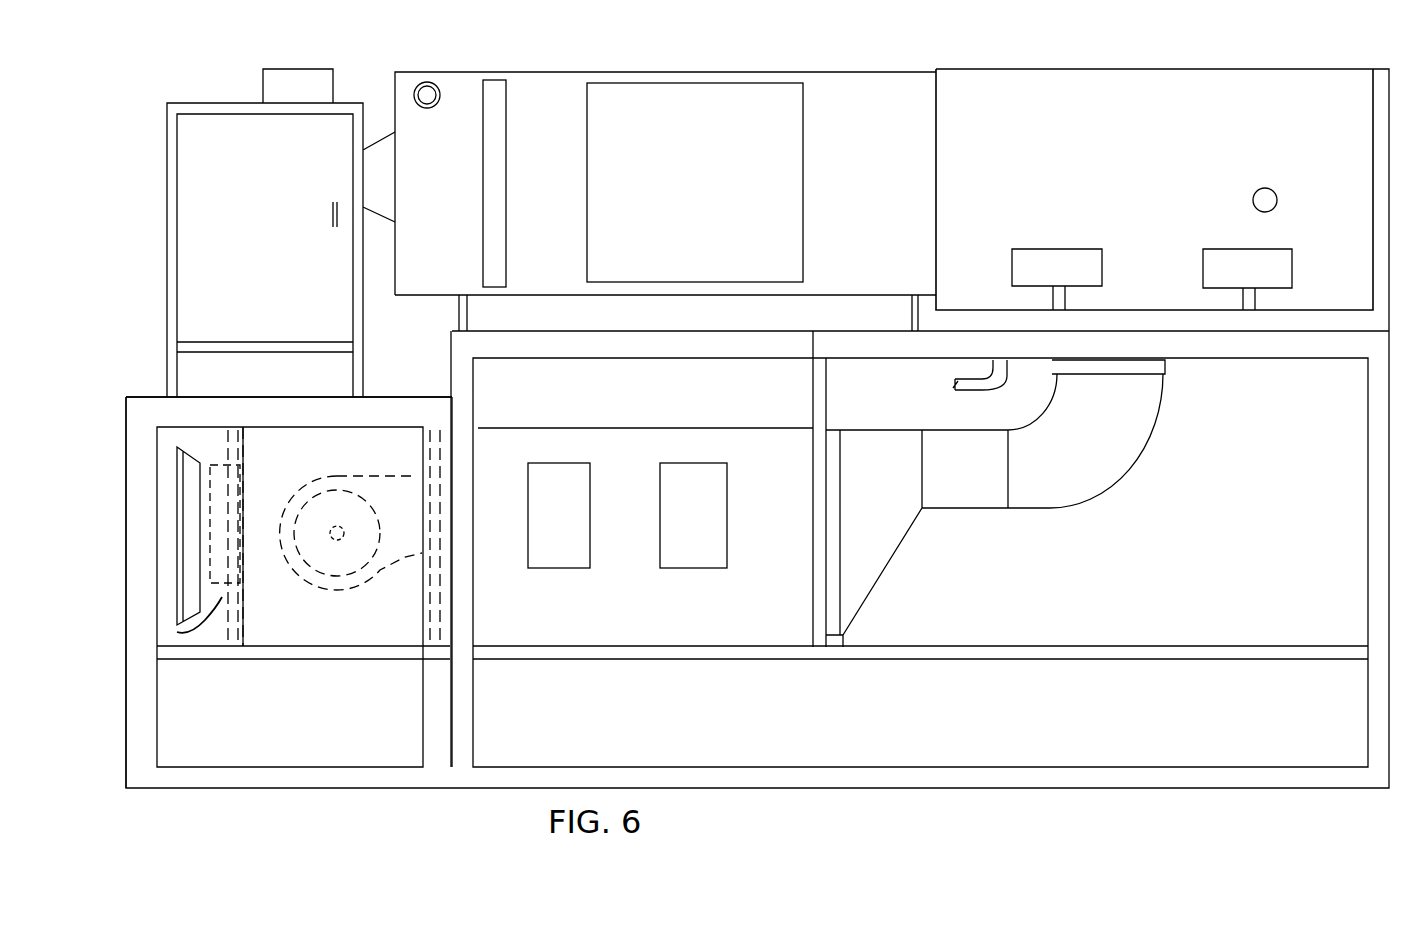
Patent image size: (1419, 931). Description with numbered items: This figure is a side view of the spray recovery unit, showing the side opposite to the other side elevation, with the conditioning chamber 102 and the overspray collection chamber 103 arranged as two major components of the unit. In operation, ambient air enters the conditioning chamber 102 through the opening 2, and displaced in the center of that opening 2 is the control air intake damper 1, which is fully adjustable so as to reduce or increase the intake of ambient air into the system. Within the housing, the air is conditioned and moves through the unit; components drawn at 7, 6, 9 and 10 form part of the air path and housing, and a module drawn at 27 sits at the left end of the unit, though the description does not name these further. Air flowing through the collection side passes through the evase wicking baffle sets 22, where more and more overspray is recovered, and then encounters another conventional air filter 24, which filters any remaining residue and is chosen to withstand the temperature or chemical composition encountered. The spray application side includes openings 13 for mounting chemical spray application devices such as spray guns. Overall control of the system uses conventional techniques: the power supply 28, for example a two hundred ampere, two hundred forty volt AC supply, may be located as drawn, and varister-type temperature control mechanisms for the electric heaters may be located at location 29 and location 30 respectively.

The control air intake damper 1 is at (172, 483).
The opening 2 is at (150, 636).
The fan 6 is at (352, 607).
The fan compartment 7 is at (300, 618).
The windows 9 is at (567, 575).
The duct 10 is at (993, 513).
The openings 13 is at (1302, 274).
The evase wicking baffle sets 22 is at (562, 118).
The air filter 24 is at (497, 75).
The left module 27 is at (144, 416).
The power supply 28 is at (214, 152).
The location for temperature control mechanism 29 is at (1262, 189).
The location for temperature control mechanism 30 is at (436, 90).
The conditioning chamber 102 is at (780, 585).
The overspray collection chamber 103 is at (868, 98).